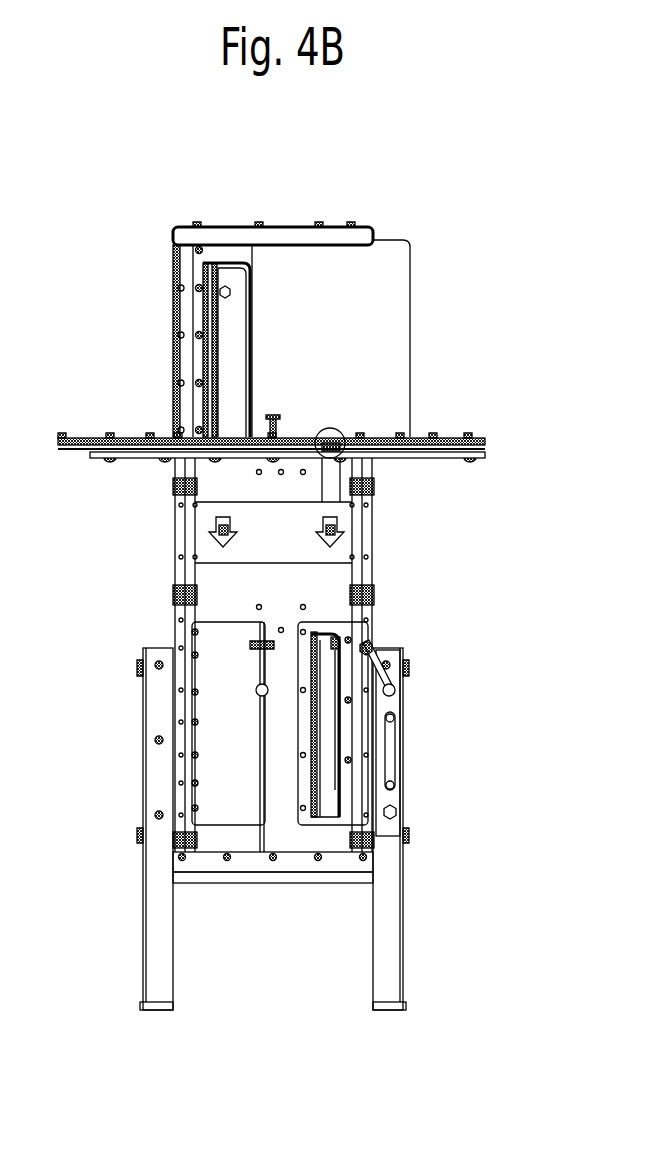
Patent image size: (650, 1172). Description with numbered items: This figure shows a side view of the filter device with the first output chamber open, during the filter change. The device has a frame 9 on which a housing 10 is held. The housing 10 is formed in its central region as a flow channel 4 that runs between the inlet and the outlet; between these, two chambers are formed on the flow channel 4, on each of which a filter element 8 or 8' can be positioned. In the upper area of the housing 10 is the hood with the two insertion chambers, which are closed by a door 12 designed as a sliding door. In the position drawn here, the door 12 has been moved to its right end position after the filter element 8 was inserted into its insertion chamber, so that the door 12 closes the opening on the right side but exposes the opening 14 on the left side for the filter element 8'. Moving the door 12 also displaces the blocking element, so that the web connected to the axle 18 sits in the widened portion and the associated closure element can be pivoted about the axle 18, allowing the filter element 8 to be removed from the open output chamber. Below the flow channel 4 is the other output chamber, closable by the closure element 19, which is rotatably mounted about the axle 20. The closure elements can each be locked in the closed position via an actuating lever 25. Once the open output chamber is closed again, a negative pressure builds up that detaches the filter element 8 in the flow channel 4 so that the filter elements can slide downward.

The flow channel 4 is at (220, 613).
The filter element 8 is at (391, 717).
The filter element 8' is at (152, 350).
The frame 9 is at (387, 882).
The housing 10 is at (222, 572).
The door 12 is at (343, 320).
The opening 14 is at (200, 295).
The axle 18 is at (355, 522).
The closure element 19 is at (235, 755).
The axle 20 is at (190, 520).
The actuating lever 25 is at (395, 690).